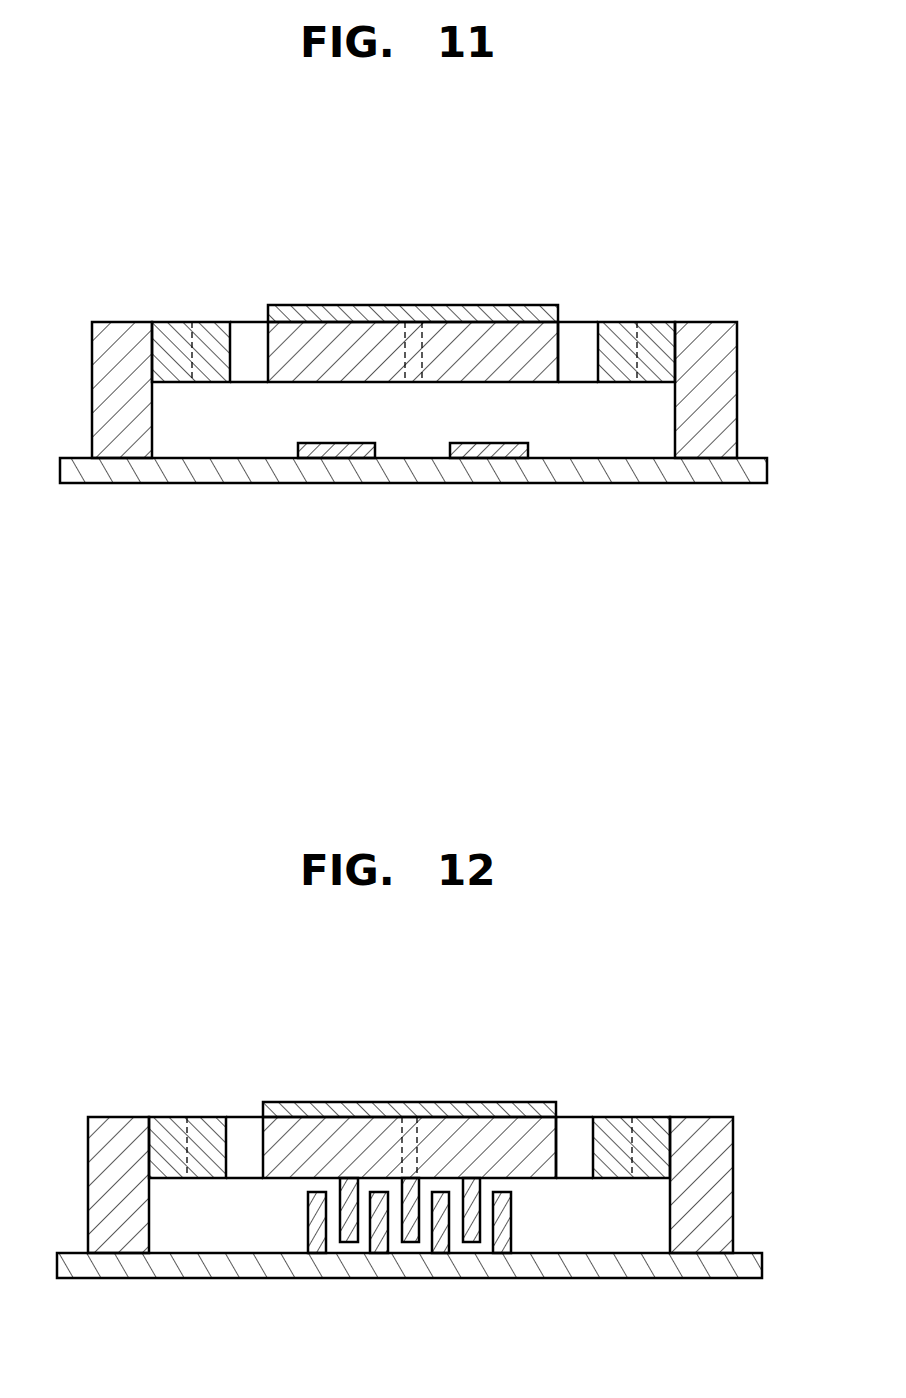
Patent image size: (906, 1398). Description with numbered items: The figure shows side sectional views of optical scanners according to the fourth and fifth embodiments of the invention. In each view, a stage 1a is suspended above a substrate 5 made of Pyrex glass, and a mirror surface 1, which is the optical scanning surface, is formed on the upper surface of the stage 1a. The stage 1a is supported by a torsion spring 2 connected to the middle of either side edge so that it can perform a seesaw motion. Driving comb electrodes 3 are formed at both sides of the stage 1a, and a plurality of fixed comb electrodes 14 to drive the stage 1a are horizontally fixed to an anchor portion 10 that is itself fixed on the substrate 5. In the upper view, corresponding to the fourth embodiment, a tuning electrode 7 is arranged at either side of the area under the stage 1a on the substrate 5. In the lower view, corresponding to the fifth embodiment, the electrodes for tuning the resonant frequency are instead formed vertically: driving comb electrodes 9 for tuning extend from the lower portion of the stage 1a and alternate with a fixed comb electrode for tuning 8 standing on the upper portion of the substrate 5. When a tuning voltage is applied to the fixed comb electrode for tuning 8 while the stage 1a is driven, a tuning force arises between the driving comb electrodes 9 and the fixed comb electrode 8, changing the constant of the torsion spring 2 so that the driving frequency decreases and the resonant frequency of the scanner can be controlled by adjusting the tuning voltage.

In FIG. 11, the mirror surface 1 is at (507, 315).
In FIG. 12, the mirror surface 1 is at (507, 1105).
In FIG. 11, the stage 1a is at (558, 322).
In FIG. 12, the stage 1a is at (556, 1118).
In FIG. 11, the torsion spring 2 is at (445, 318).
In FIG. 12, the torsion spring 2 is at (444, 1105).
In FIG. 11, the driving comb electrodes 3 is at (245, 335).
In FIG. 12, the driving comb electrodes 3 is at (242, 1130).
In FIG. 11, the substrate 5 is at (595, 470).
In FIG. 12, the substrate 5 is at (590, 1265).
In FIG. 11, the tuning electrode 7 is at (340, 452).
In FIG. 12, the fixed comb electrode for tuning 8 is at (500, 1255).
In FIG. 12, the driving comb electrodes for tuning 9 is at (468, 1232).
In FIG. 11, the anchor portion 10 is at (118, 340).
In FIG. 12, the anchor portion 10 is at (122, 1130).
In FIG. 11, the fixed comb electrodes 14 is at (173, 332).
In FIG. 12, the fixed comb electrodes 14 is at (173, 1125).